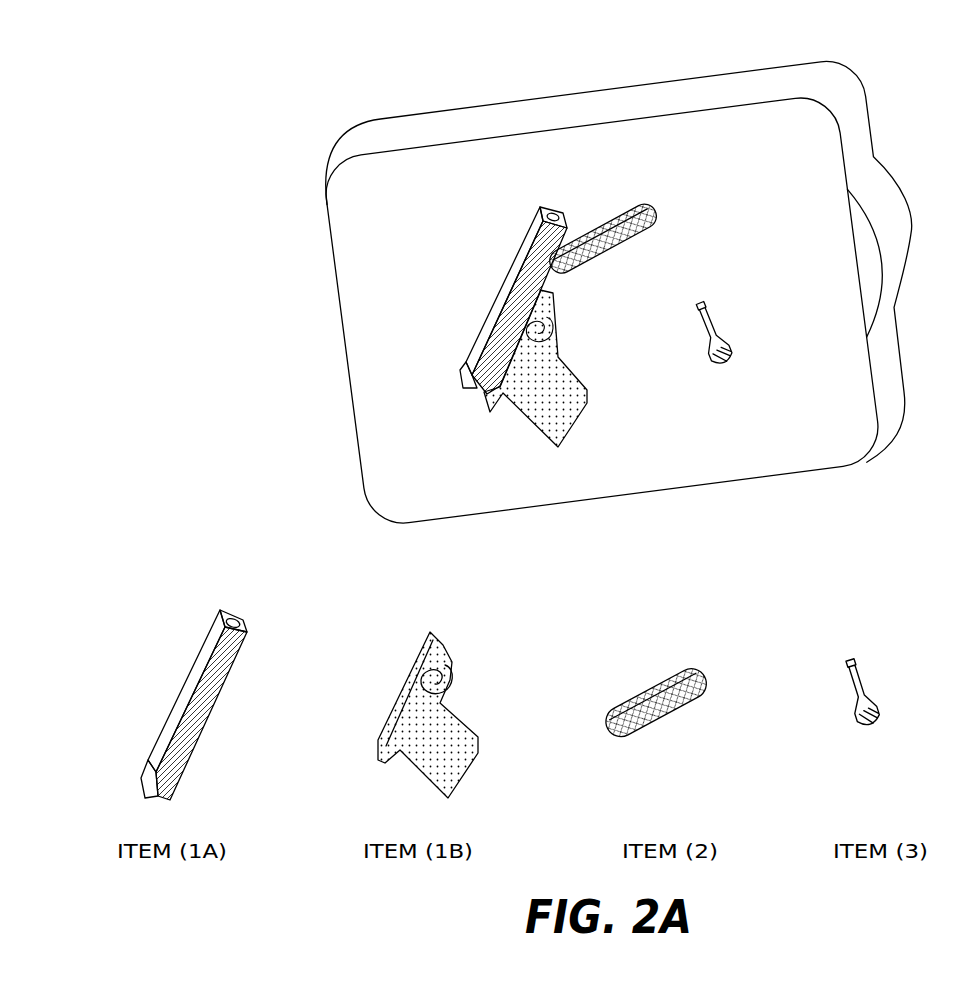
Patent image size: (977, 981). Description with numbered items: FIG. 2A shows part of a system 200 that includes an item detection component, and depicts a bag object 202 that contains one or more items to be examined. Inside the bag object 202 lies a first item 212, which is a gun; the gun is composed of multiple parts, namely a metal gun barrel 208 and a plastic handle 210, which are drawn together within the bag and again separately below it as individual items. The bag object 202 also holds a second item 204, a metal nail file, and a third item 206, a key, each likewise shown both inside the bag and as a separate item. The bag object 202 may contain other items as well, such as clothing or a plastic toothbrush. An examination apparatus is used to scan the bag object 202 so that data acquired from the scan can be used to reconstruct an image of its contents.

The system 200 is at (135, 82).
The bag object 202 is at (851, 74).
The second item 204 is at (651, 199).
The third item 206 is at (718, 312).
The metal gun barrel 208 is at (540, 203).
The plastic handle 210 is at (571, 428).
The first item 212 is at (490, 275).